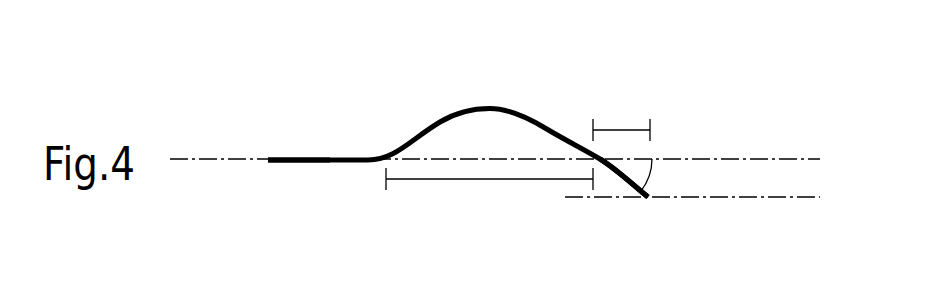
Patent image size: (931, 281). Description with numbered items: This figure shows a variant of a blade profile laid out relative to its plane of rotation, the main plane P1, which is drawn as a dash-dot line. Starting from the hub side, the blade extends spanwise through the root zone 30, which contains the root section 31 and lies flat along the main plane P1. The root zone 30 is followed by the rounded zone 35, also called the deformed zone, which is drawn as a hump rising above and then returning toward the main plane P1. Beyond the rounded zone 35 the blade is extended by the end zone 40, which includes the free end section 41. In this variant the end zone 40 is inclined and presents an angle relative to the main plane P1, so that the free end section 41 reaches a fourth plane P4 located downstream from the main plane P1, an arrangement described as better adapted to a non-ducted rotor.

The root zone 30 is at (320, 170).
The root section 31 is at (268, 161).
The rounded zone 35 is at (489, 193).
The end zone 40 is at (621, 114).
The free end section 41 is at (648, 200).
The main plane P1 is at (781, 159).
The fourth plane P4 is at (803, 198).